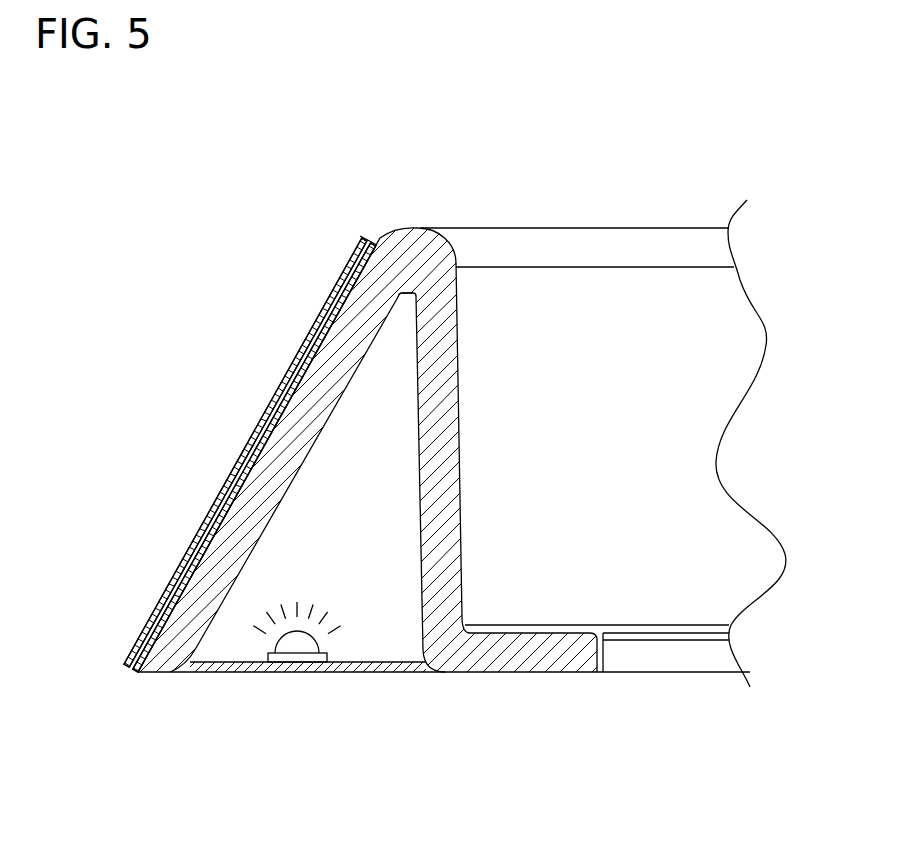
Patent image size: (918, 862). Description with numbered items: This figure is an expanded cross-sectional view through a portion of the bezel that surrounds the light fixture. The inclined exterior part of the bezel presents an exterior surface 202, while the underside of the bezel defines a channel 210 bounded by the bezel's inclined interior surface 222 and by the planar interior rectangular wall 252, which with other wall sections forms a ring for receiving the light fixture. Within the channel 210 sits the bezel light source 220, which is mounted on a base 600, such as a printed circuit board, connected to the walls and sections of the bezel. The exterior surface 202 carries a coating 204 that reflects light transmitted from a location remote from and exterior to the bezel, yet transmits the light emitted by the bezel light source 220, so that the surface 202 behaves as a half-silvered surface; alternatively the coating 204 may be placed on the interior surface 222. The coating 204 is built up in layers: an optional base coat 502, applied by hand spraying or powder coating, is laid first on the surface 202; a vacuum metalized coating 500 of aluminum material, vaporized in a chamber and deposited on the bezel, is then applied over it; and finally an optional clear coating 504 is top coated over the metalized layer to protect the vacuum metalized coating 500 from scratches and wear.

The exterior surface 202 is at (252, 480).
The coating 204 is at (370, 233).
The channel 210 is at (372, 562).
The bezel light source 220 is at (296, 658).
The interior surface 222 is at (316, 441).
The planar interior rectangular wall 252 is at (461, 441).
The vacuum metalized coating 500 is at (262, 425).
The base coat 502 is at (322, 311).
The clear coating 504 is at (208, 517).
The base 600 is at (372, 675).